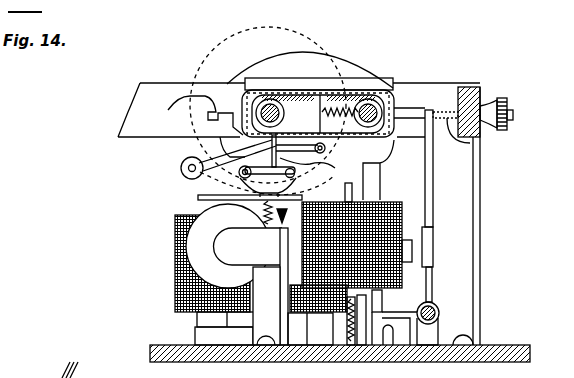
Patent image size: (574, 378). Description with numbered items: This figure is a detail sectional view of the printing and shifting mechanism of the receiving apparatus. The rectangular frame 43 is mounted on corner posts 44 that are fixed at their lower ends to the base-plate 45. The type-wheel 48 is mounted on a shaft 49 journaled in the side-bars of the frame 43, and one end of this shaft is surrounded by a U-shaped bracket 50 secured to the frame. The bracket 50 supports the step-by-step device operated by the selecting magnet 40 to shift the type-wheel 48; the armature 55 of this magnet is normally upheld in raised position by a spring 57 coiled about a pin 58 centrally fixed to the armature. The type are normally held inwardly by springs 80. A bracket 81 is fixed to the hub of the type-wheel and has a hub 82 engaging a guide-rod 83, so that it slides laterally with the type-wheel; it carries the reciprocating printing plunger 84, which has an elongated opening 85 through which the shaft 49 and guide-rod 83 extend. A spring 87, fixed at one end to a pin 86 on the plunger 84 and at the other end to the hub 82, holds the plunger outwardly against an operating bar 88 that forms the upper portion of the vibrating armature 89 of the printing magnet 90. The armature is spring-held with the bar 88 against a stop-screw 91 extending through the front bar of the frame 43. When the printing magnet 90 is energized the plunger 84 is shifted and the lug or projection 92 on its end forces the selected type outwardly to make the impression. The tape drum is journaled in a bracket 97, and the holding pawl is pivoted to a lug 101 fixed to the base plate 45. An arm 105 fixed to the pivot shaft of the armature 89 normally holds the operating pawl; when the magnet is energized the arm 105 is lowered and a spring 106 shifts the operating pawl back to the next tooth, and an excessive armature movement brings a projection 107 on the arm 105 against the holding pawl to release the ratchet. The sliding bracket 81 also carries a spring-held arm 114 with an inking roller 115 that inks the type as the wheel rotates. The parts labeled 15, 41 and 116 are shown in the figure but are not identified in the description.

The frame 15 is at (20, 373).
The selecting magnet 40 is at (176, 286).
The armature plate 41 is at (206, 214).
The rectangular frame 43 is at (137, 108).
The corner posts 44 is at (482, 263).
The base-plate 45 is at (520, 345).
The type-wheel 48 is at (200, 62).
The shaft 49 is at (280, 108).
The U-shaped bracket 50 is at (198, 179).
The armature 55 is at (308, 196).
The spring 57 is at (262, 212).
The pin 58 is at (270, 230).
The springs 80 is at (72, 363).
The bracket 81 is at (370, 80).
The hub 82 is at (383, 110).
The guide-rod 83 is at (377, 120).
The printing plunger 84 is at (254, 93).
The elongated opening 85 is at (297, 96).
The pin 86 is at (319, 120).
The spring 87 is at (340, 120).
The operating bar 88 is at (447, 108).
The vibrating armature 89 is at (450, 218).
The printing magnet 90 is at (400, 208).
The stop-screw 91 is at (470, 145).
The lug or projection 92 is at (190, 97).
The bracket 97 is at (398, 326).
The lug 101 is at (420, 348).
The arm 105 is at (330, 347).
The spring 106 is at (362, 348).
The projection 107 is at (382, 300).
The spring-held arm 114 is at (242, 168).
The inking roller 115 is at (182, 160).
The pillar 116 is at (268, 350).